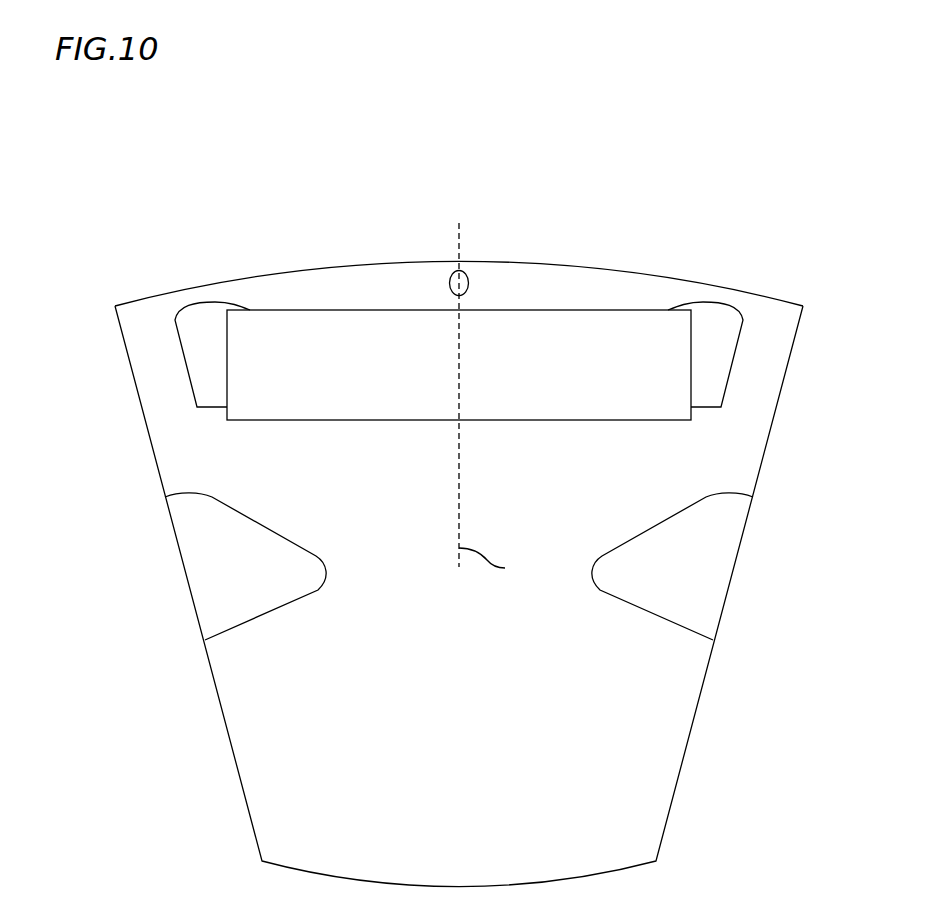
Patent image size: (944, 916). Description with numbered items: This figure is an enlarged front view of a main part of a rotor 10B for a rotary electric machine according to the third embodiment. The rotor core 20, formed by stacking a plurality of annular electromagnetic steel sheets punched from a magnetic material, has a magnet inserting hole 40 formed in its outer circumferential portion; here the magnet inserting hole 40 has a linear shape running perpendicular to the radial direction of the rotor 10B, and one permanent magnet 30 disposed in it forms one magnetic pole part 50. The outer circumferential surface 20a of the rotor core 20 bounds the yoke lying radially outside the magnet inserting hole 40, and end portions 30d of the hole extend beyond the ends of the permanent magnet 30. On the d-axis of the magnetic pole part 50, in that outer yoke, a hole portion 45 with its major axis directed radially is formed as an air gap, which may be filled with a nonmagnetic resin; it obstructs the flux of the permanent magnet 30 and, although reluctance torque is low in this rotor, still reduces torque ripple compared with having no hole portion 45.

The rotor for a rotary electric machine 10B is at (736, 157).
The rotor core 20 is at (730, 275).
The outer peripheral surface of rotor core 20a is at (773, 294).
The permanent magnet 30 is at (645, 405).
The magnet insertion hole end portion (flux barrier) 30d is at (227, 370).
The magnet inserting hole 40 is at (548, 311).
The hole portion 45 is at (449, 279).
The magnetic pole part 50 is at (606, 246).